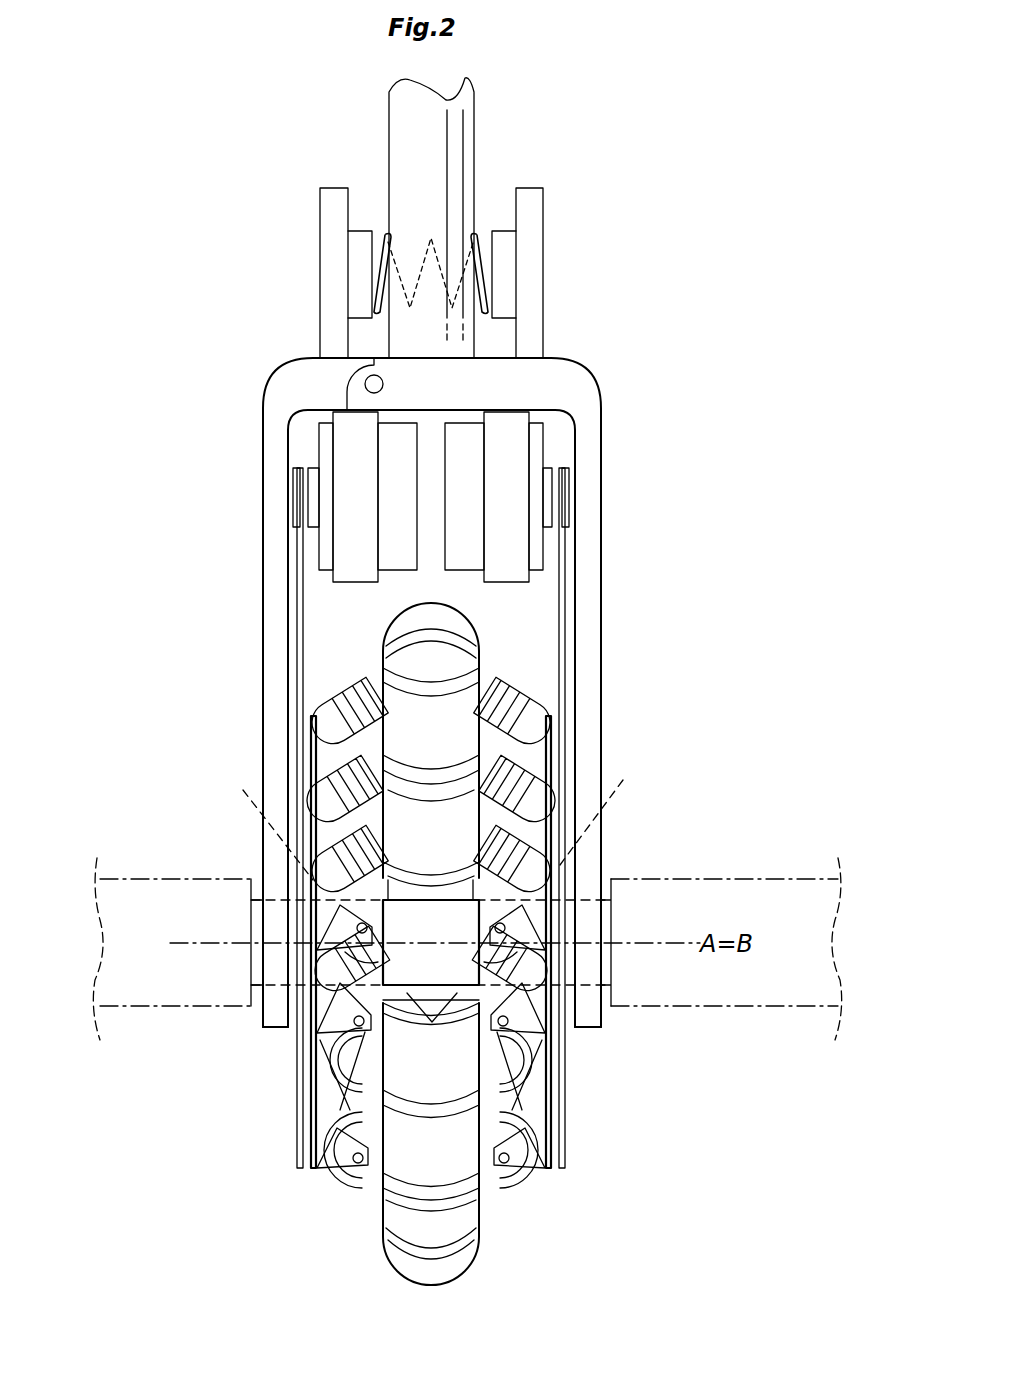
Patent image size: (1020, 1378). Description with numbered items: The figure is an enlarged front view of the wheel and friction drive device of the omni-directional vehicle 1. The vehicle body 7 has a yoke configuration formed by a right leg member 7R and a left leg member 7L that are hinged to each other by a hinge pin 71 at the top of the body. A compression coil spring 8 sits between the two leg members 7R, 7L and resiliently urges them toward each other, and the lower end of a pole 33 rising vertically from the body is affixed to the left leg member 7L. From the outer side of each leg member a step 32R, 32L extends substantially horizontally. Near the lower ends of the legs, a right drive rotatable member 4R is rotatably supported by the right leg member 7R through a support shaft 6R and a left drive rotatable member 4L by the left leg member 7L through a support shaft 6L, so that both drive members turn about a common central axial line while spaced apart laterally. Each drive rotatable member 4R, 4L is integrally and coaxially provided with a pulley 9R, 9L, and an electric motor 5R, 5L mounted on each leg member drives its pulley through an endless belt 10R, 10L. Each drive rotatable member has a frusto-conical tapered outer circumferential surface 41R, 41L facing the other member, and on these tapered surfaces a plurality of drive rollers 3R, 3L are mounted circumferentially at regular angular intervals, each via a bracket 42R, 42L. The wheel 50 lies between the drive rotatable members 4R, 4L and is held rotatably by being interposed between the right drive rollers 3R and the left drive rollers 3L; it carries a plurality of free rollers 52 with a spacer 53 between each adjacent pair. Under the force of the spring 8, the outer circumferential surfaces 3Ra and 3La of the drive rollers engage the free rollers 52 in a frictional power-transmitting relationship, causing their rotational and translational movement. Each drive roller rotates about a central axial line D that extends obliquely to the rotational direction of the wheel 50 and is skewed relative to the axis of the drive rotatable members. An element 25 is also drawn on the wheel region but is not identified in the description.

The omni-directional vehicle 1 is at (638, 513).
The pole 33 is at (462, 121).
The compression coil spring 8 is at (476, 236).
The hinge pin 71 is at (366, 383).
The vehicle body 7 is at (560, 370).
The left leg member 7L is at (287, 858).
The right leg member 7R is at (590, 693).
The electric motor 5L is at (385, 460).
The electric motor 5R is at (472, 470).
The endless belt 10L is at (310, 632).
The endless belt 10R is at (558, 600).
The pulley 9L is at (300, 750).
The pulley 9R is at (562, 755).
The left drive rollers 3L is at (335, 692).
The right drive rollers 3R is at (513, 700).
The outer circumferential surface 3La is at (345, 958).
The outer circumferential surface 3Ra is at (517, 968).
The central axial line D is at (431, 821).
The step 32L is at (119, 879).
The step 32R is at (763, 879).
The frusto-conical tapered outer circumferential surface 41L is at (355, 915).
The frusto-conical tapered outer circumferential surface 41R is at (510, 912).
The support shaft 6L is at (278, 985).
The support shaft 6R is at (588, 985).
The left drive rotatable member 4L is at (320, 1056).
The right drive rotatable member 4R is at (543, 1065).
The hub 25 is at (415, 1050).
The spacer 53 is at (425, 1105).
The bracket 42L is at (350, 1152).
The bracket 42R is at (525, 1143).
The free rollers 52 is at (418, 1275).
The wheel 50 is at (483, 1268).